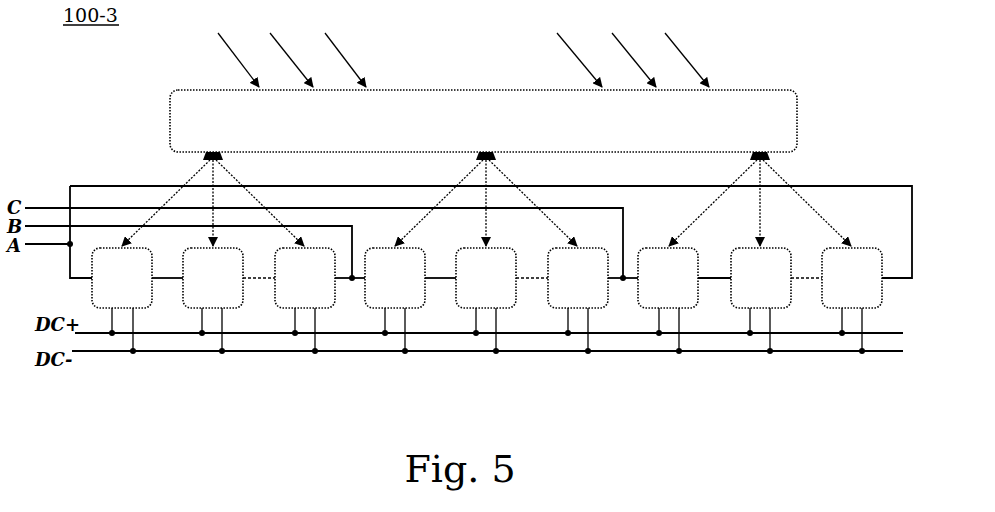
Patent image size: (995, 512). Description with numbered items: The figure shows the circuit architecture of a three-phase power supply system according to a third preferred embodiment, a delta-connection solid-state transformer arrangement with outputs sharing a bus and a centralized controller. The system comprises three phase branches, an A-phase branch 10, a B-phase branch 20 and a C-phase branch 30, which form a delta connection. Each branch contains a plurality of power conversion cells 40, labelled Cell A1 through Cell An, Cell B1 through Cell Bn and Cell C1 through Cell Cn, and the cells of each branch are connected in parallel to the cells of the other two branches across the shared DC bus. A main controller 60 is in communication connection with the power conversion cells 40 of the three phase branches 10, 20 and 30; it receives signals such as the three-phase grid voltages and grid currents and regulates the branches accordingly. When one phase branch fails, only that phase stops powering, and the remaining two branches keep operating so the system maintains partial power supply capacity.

The A-phase branch 10 is at (233, 324).
The B-phase branch 20 is at (616, 304).
The C-phase branch 30 is at (888, 304).
The power conversion cell 40 is at (154, 304).
The main controller 60 is at (762, 88).